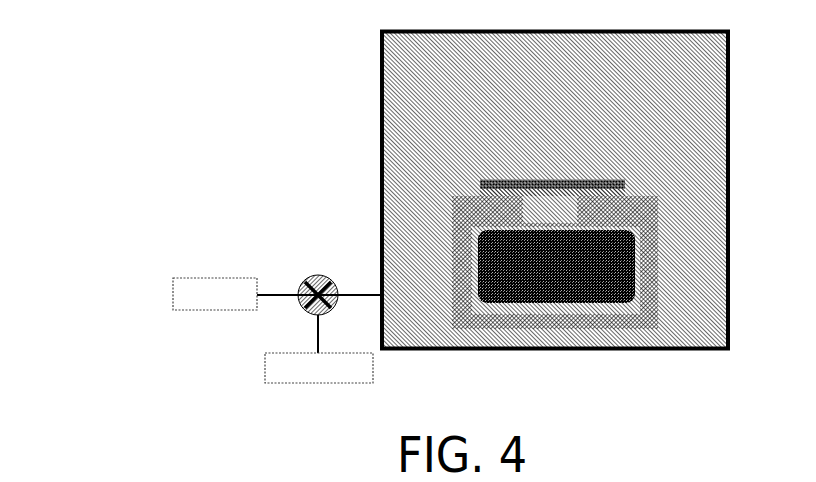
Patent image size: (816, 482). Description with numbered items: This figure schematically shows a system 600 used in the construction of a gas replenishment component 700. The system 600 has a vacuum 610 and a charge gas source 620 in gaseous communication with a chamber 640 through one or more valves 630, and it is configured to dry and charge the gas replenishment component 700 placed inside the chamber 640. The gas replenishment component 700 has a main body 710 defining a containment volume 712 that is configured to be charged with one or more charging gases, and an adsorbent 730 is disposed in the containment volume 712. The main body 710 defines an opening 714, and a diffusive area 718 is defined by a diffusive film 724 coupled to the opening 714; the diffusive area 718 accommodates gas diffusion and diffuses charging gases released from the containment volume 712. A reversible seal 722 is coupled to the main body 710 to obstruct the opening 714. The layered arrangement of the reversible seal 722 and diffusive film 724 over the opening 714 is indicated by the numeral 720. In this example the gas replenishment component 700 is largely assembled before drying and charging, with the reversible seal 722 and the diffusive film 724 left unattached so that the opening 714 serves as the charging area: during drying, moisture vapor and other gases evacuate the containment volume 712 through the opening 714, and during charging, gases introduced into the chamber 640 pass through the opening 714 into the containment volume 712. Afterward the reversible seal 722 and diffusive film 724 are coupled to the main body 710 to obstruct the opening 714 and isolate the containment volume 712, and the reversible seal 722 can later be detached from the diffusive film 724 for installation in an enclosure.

The system 600 is at (97, 80).
The vacuum 610 is at (195, 310).
The charge gas source 620 is at (295, 383).
The valve 630 is at (315, 273).
The chamber 640 is at (382, 57).
The gas replenishment component 700 is at (463, 127).
The main body 710 is at (647, 252).
The containment volume 712 is at (625, 310).
The opening 714 is at (533, 213).
The diffusive area 718 is at (542, 185).
The lid assembly 720 is at (569, 159).
The reversible seal 722 is at (607, 176).
The diffusive film 724 is at (613, 193).
The adsorbent 730 is at (510, 298).